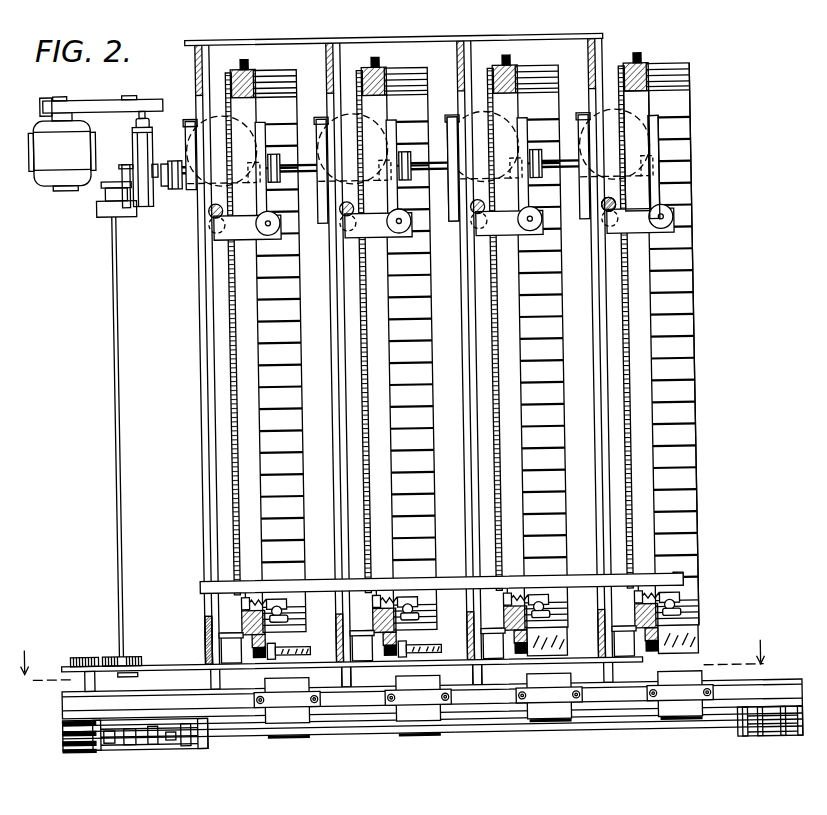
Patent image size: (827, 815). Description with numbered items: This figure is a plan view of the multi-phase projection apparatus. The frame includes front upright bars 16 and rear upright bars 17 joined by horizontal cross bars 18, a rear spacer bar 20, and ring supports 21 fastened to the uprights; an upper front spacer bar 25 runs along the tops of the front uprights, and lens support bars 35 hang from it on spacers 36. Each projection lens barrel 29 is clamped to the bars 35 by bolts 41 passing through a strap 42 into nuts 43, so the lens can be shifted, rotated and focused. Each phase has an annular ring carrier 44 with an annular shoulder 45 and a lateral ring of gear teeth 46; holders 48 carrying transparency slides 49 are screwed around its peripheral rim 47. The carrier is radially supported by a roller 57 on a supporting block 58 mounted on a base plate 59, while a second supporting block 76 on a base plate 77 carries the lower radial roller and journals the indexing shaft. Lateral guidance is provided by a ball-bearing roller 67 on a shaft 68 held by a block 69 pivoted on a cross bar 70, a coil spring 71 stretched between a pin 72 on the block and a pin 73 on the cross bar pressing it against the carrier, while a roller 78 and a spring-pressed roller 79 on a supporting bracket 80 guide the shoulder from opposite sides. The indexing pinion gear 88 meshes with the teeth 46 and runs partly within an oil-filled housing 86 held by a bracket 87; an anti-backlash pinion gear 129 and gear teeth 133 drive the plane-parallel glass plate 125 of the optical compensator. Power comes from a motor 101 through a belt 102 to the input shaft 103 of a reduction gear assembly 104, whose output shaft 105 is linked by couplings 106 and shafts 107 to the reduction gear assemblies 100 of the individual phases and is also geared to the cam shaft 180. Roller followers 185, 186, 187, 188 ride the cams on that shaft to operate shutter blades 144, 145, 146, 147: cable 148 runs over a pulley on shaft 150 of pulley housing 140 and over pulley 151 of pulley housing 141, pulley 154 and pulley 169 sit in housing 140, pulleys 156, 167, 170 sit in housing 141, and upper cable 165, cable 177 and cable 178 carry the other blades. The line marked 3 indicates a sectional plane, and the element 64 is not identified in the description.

The section line 3- 3 is at (392, 647).
The front upright bars 16 is at (203, 619).
The rear upright bars 17 is at (463, 54).
The horizontal cross bars 18 is at (346, 345).
The rear spacer bar 20 is at (588, 37).
The ring supports 21 is at (380, 352).
The upper front spacer bar 25 is at (179, 661).
The lens barrel 29 is at (398, 719).
The lens support bars 35 is at (503, 692).
The spacers 36 is at (342, 672).
The bolts 41 is at (256, 701).
The strap 42 is at (288, 703).
The nuts 43 is at (310, 701).
The ring carrier 44 is at (232, 78).
The annular shoulder 45 is at (247, 62).
The ring of gear teeth 46 is at (231, 86).
The peripheral rim 47 is at (250, 77).
The holder 48 is at (693, 70).
The transparency slide 49 is at (677, 68).
The roller 57 is at (645, 657).
The supporting block 58 is at (222, 654).
The base plate 59 is at (336, 626).
The bearing block 64 is at (238, 626).
The ball-bearing roller 67 is at (285, 614).
The shaft 68 is at (279, 609).
The block 69 is at (275, 598).
The cross bar 70 is at (224, 581).
The coil spring 71 is at (249, 597).
The pin 72 is at (247, 598).
The pin 73 is at (243, 592).
The supporting block 76 is at (214, 206).
The base plate 77 is at (459, 219).
The ball-bearing roller 78 is at (213, 219).
The ball-bearing roller 79 is at (284, 225).
The supporting bracket 80 is at (217, 234).
The closed housing 86 is at (648, 187).
The bracket 87 is at (660, 167).
The pinion gear 88 is at (632, 206).
The reduction gear assembly 100 is at (199, 118).
The motor 101 is at (55, 171).
The belt 102 is at (105, 98).
The input shaft 103 is at (142, 121).
The reduction gear assembly 104 is at (150, 197).
The output shaft 105 is at (165, 158).
The couplings 106 is at (176, 181).
The shafts 107 is at (571, 172).
The plane-parallel glass plate 125 is at (690, 644).
The pinion gear 129 is at (517, 655).
The gear teeth 133 is at (253, 657).
The pulley housing 140 is at (746, 740).
The pulley housing 141 is at (192, 743).
The shutter blade 144 is at (666, 723).
The shutter blade 145 is at (547, 725).
The shutter blade 146 is at (424, 737).
The shutter blade 147 is at (340, 737).
The cable 148 is at (603, 721).
The shaft 150 is at (789, 741).
The pulley 151 is at (127, 741).
The pulley 154 is at (764, 742).
The pulley 156 is at (146, 741).
The upper cable 165 is at (581, 727).
The pulley 167 is at (106, 739).
The pulley 169 is at (741, 739).
The pulley 170 is at (187, 742).
The cable 177 is at (452, 734).
The cable 178 is at (269, 741).
The shaft 180 is at (120, 451).
The roller follower 185 is at (57, 718).
The roller follower 186 is at (57, 727).
The roller follower 187 is at (57, 736).
The roller follower 188 is at (57, 744).